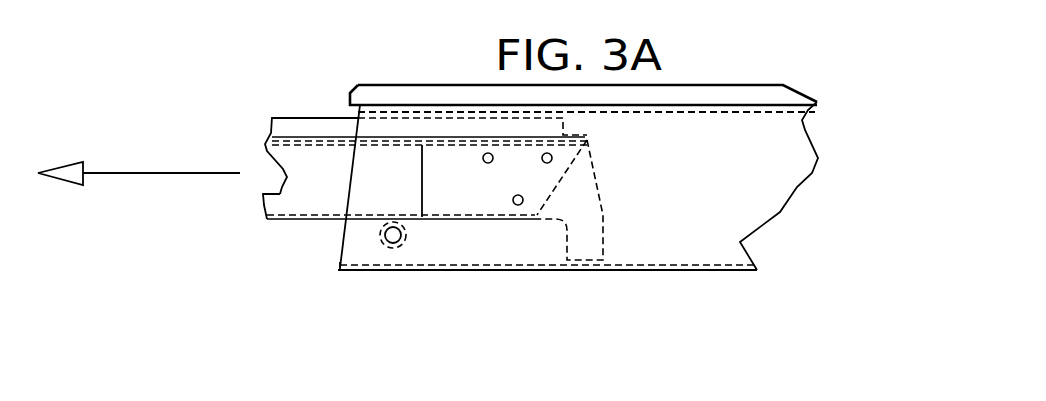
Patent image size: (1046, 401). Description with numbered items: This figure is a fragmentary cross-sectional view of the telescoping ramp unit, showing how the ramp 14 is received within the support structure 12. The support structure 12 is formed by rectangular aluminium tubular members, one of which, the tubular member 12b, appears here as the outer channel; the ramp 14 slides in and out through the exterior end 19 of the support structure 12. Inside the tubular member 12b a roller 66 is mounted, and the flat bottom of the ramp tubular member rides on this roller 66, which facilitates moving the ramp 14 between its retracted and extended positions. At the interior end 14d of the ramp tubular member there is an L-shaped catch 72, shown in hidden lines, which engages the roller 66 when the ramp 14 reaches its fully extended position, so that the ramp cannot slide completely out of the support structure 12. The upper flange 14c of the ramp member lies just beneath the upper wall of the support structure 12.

The support structure 12 is at (752, 193).
The tubular member 12b is at (705, 243).
The ramp 14 is at (312, 188).
The upper flange of slide member 14c is at (297, 118).
The interior end of tubular member 14d is at (264, 201).
The exterior end 19 is at (355, 245).
The roller 66 is at (407, 240).
The L-shaped catch 72 is at (590, 240).